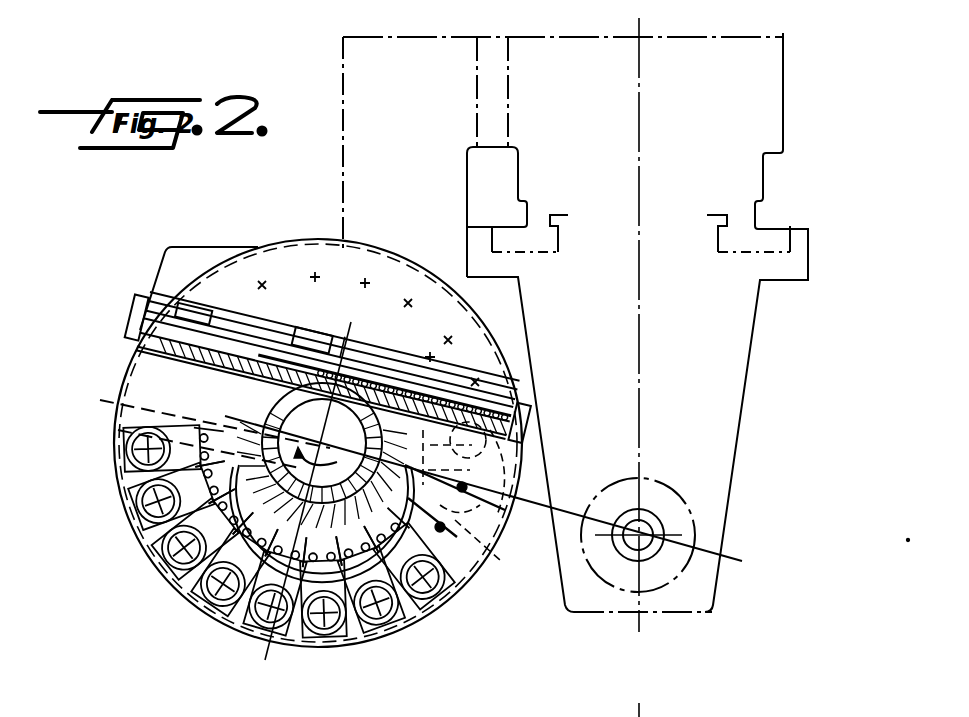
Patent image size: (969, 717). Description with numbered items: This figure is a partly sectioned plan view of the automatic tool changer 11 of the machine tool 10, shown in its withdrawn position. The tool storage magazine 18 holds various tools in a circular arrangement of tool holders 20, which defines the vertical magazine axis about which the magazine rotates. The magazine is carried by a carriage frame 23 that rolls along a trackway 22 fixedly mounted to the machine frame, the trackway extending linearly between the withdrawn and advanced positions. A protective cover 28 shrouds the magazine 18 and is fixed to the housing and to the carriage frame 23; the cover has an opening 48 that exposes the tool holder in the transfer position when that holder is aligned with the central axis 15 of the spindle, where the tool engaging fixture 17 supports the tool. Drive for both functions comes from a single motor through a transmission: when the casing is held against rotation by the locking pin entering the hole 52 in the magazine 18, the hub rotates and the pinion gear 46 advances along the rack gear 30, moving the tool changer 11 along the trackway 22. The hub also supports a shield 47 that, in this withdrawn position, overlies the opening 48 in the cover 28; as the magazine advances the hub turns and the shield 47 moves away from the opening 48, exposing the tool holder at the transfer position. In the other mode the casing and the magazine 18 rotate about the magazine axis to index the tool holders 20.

The machine tool 10 is at (752, 383).
The automatic tool changer 11 is at (137, 234).
The central axis 15 is at (640, 536).
The tool engaging fixture 17 is at (653, 555).
The tool storage magazine 18 is at (167, 577).
The tool holders 20 is at (140, 452).
The trackway 22 is at (143, 310).
The carriage frame 23 is at (248, 332).
The protective cover 28 is at (215, 262).
The rack gear 30 is at (453, 357).
The pinion gear 46 is at (280, 392).
The shield 47 is at (512, 482).
The opening 48 is at (483, 567).
The hole 52 is at (130, 403).